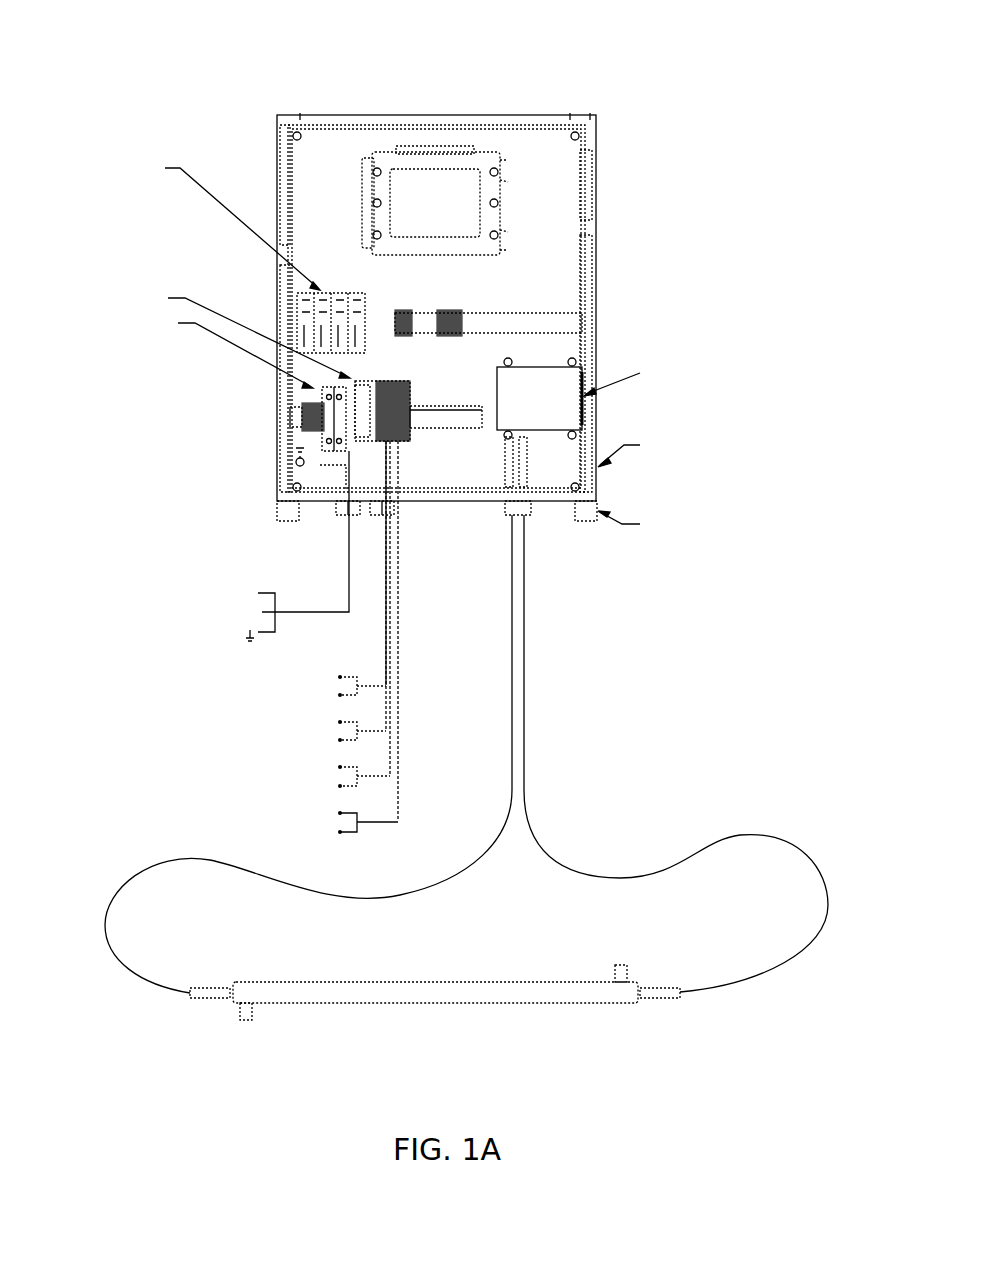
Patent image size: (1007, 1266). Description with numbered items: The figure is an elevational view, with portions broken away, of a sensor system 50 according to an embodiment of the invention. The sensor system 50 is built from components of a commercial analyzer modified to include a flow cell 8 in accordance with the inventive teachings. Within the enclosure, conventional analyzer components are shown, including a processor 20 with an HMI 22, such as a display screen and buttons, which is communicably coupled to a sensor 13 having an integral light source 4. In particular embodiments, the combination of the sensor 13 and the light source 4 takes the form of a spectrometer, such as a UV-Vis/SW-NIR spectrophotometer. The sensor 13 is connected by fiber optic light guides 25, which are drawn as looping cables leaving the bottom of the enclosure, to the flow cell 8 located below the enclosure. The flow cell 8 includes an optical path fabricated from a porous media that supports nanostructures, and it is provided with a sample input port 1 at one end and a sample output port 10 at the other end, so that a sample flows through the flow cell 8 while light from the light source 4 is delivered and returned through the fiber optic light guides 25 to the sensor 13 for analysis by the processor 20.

The sensor system 50 is at (715, 135).
The processor 20 is at (357, 180).
The HMI 22 is at (452, 190).
The sensor 13 is at (645, 416).
The light source 4 is at (649, 432).
The fiber optic light guides 25 is at (330, 893).
The flow cell 8 is at (394, 1013).
The sample input port 1 is at (246, 1022).
The sample output port 10 is at (621, 940).